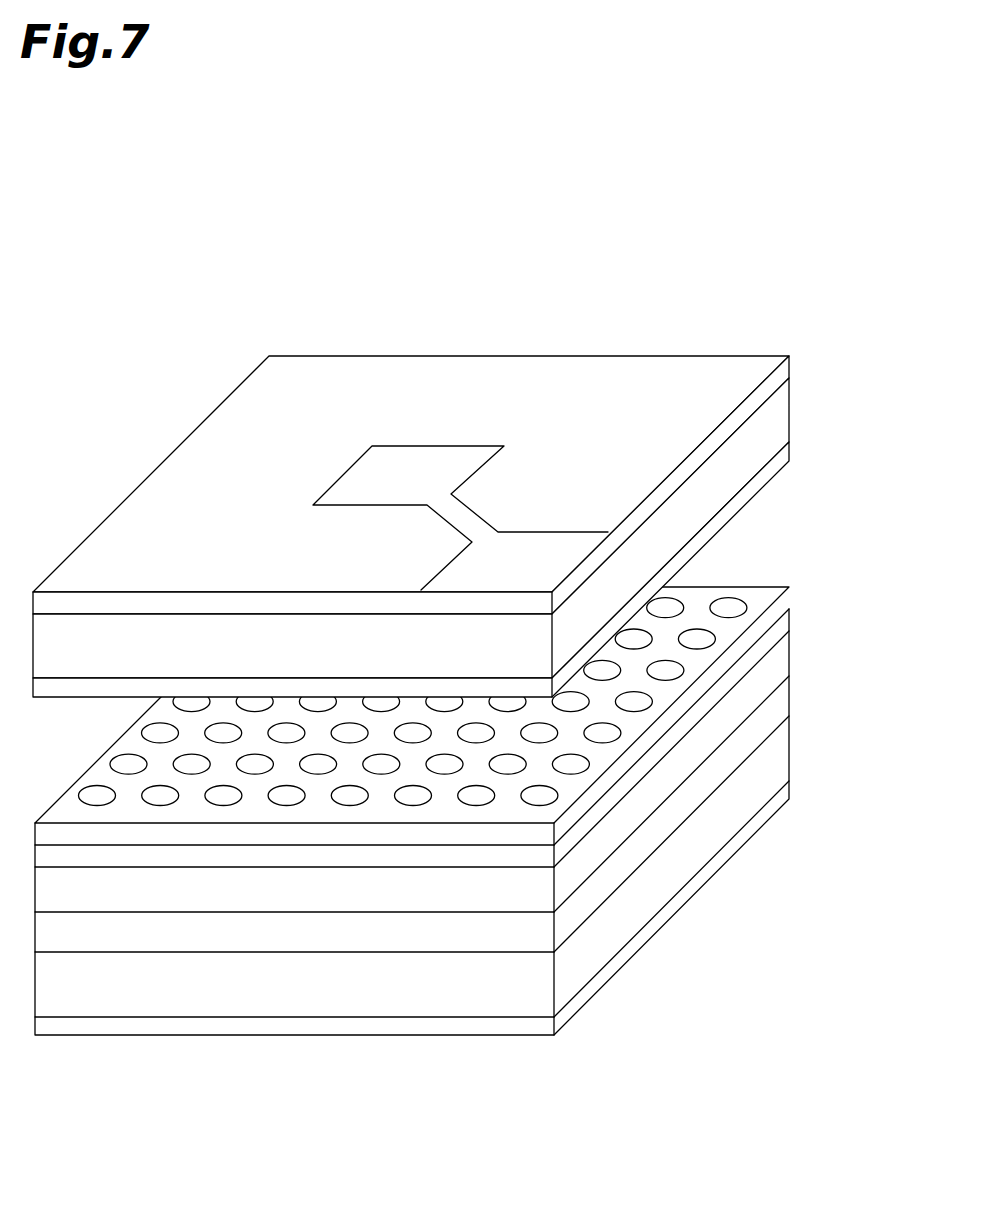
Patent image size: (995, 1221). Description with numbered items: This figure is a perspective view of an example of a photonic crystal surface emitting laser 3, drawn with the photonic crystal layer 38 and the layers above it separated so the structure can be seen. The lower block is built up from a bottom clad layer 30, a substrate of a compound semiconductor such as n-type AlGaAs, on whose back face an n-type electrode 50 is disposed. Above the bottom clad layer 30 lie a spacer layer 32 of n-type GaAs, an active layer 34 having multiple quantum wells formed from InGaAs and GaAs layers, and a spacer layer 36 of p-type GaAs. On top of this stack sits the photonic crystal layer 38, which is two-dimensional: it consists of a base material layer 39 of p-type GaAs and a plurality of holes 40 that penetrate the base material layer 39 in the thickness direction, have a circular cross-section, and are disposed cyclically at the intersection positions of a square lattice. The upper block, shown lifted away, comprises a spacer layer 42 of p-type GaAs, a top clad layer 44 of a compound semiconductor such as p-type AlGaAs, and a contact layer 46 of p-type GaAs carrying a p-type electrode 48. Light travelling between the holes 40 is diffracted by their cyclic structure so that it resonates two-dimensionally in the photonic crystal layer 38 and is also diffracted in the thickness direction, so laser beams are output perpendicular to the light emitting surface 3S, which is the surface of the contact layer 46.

The photonic crystal surface emitting laser 3 is at (155, 318).
The light emitting surface 3S is at (659, 375).
The p-type electrode 48 is at (417, 462).
The contact layer 46 is at (789, 372).
The top clad layer 44 is at (781, 414).
The spacer layer 42 is at (781, 460).
The base material layer 39 is at (700, 593).
The holes 40 is at (727, 607).
The photonic crystal layer 38 is at (797, 598).
The spacer layer 36 is at (781, 636).
The active layer 34 is at (778, 664).
The spacer layer 32 is at (778, 708).
The bottom clad layer 30 is at (778, 758).
The n-type electrode 50 is at (783, 796).